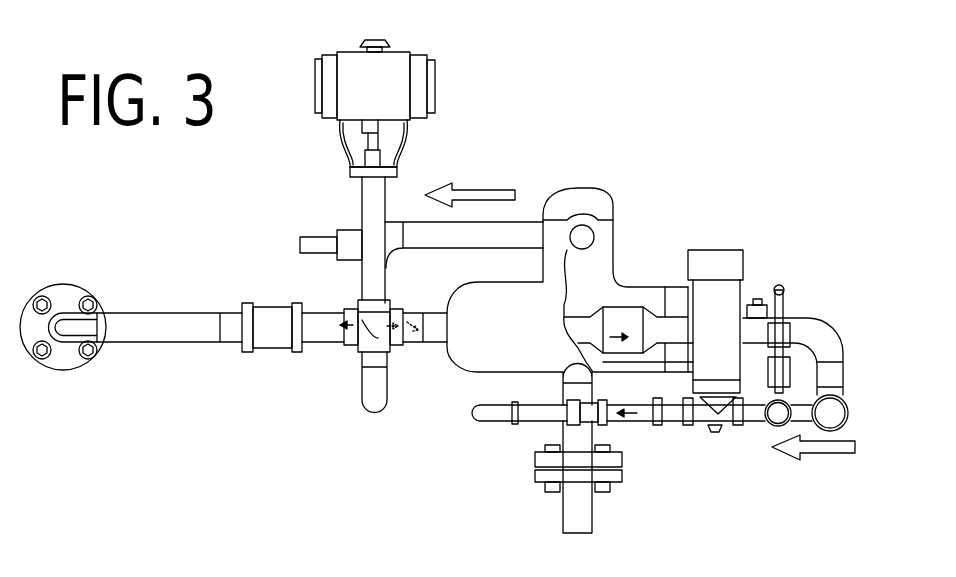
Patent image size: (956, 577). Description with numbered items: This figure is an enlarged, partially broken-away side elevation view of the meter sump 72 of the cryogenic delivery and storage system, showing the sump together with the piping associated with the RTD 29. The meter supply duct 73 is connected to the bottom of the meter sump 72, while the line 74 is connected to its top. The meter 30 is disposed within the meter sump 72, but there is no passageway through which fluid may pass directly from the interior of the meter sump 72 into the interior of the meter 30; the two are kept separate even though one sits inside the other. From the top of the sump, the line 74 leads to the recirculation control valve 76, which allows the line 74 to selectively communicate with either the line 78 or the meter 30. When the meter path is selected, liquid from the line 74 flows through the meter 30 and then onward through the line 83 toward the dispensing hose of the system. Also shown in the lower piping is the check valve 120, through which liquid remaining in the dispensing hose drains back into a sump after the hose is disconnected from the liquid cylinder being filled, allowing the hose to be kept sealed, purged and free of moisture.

The line 78 is at (203, 312).
The RTD 29 is at (313, 237).
The recirculation control valve 76 is at (357, 350).
The meter sump 72 is at (465, 373).
The line 74 is at (613, 270).
The meter 30 is at (655, 290).
The line 83 is at (817, 318).
The check valve 120 is at (637, 424).
The meter supply duct 73 is at (592, 523).